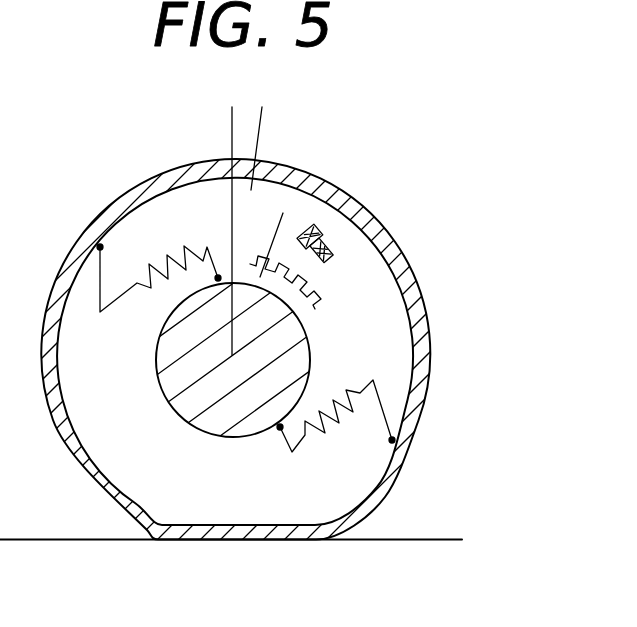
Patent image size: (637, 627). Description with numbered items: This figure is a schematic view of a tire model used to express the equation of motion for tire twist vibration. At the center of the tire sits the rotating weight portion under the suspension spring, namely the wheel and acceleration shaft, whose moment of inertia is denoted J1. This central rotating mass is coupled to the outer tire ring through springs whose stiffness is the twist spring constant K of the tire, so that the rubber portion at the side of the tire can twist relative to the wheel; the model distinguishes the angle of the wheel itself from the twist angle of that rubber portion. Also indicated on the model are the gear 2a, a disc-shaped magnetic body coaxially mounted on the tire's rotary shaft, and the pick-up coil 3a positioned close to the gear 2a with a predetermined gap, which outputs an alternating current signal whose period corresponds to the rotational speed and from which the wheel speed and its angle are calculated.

The gear 2a is at (313, 306).
The pick-up coil 3a is at (330, 260).
The moment of inertia of the rotating weight portion J1 is at (210, 418).
The twist spring constant of the tire K is at (246, 346).